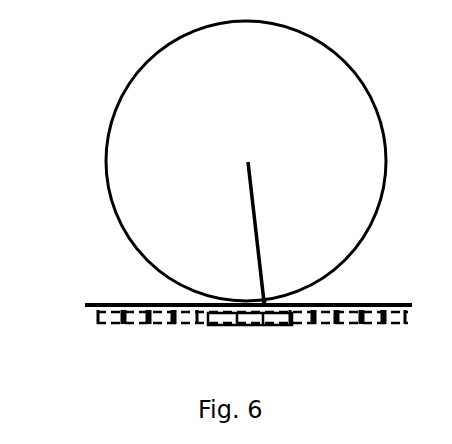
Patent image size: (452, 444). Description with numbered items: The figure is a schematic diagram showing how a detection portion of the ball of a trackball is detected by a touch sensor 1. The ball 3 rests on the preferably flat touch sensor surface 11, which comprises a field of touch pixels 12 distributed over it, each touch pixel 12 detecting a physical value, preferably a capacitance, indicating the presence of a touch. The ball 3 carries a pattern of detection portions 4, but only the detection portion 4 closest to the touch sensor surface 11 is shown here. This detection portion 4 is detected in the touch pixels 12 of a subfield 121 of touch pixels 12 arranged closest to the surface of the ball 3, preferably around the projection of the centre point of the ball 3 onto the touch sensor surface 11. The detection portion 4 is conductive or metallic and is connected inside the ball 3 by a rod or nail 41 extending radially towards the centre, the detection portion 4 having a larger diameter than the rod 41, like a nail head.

The touch sensor 1 is at (219, 319).
The touch sensor surface 11 is at (372, 302).
The touch pixels 12 is at (375, 315).
The subfield of touch pixels 121 is at (210, 327).
The ball 3 is at (362, 83).
The detection portion 4 is at (266, 298).
The rod 41 is at (261, 243).